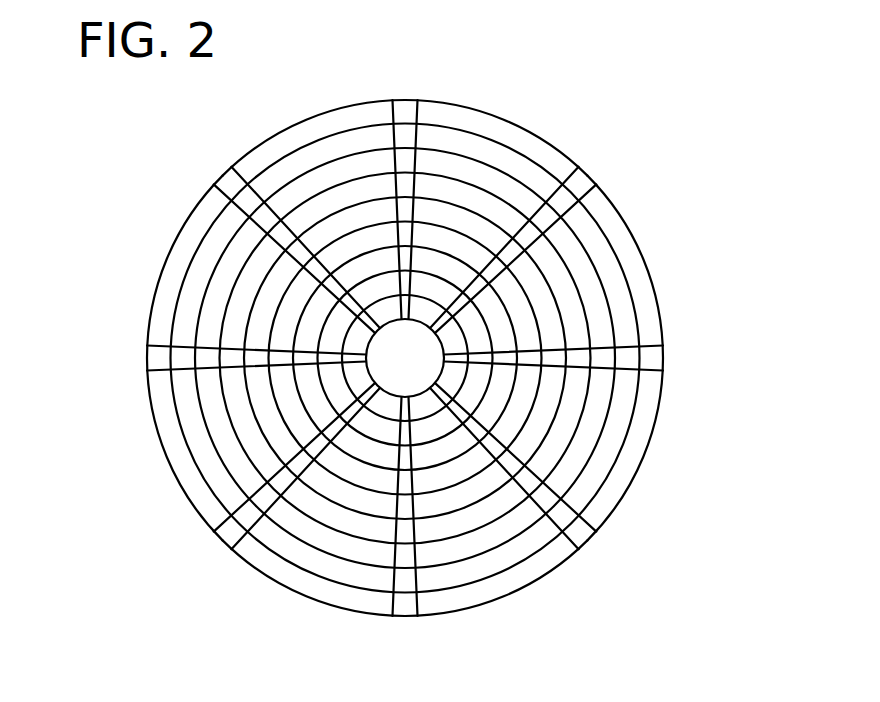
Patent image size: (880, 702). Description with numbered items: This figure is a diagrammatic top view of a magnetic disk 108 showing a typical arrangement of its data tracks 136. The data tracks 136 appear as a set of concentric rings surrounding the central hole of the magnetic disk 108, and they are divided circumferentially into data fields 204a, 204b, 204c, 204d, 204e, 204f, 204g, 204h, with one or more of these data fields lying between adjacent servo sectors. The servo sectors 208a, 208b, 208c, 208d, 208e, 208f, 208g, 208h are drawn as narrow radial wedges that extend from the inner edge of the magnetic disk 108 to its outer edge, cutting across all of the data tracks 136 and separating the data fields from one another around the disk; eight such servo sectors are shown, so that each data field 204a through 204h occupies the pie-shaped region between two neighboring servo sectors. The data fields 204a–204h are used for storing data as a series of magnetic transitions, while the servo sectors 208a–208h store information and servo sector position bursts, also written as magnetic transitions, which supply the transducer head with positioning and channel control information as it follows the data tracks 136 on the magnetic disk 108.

The magnetic disk 108 is at (356, 104).
The data tracks 136 is at (510, 146).
The data field 204a is at (470, 107).
The data field 204b is at (638, 240).
The data field 204c is at (652, 438).
The data field 204d is at (520, 590).
The data field 204e is at (305, 597).
The data field 204f is at (160, 447).
The data field 204g is at (153, 288).
The data field 204h is at (303, 118).
The servo sector 208a is at (416, 99).
The servo sector 208b is at (590, 177).
The servo sector 208c is at (665, 355).
The servo sector 208d is at (590, 534).
The servo sector 208e is at (402, 616).
The servo sector 208f is at (219, 539).
The servo sector 208g is at (146, 357).
The servo sector 208h is at (222, 177).